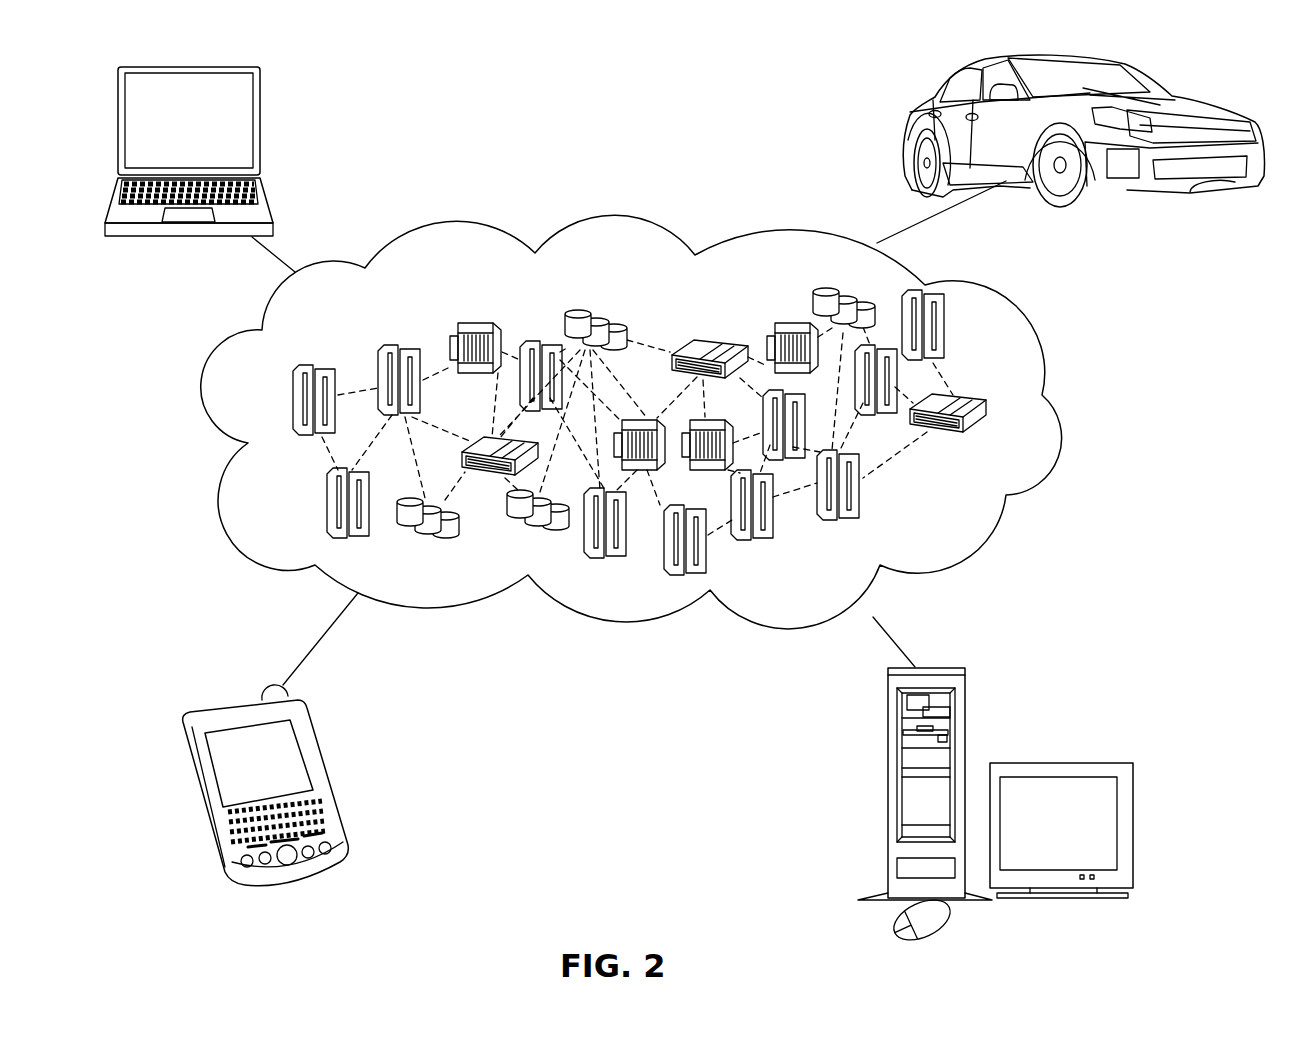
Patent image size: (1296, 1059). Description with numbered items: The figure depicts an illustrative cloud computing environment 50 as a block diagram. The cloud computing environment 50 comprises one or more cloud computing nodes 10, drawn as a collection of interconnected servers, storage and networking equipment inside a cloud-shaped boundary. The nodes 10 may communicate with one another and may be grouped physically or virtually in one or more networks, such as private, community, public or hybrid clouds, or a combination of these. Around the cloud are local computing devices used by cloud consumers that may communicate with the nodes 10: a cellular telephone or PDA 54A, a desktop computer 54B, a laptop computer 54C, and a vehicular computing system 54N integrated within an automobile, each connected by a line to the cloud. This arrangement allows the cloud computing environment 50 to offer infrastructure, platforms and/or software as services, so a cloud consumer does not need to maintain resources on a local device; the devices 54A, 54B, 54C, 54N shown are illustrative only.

The cloud computing environment 50 is at (1058, 413).
The cloud computing node 10 is at (965, 512).
The cellular telephone or PDA 54A is at (316, 746).
The desktop computer 54B is at (888, 730).
The laptop computer 54C is at (260, 105).
The vehicular computing system 54N is at (908, 121).